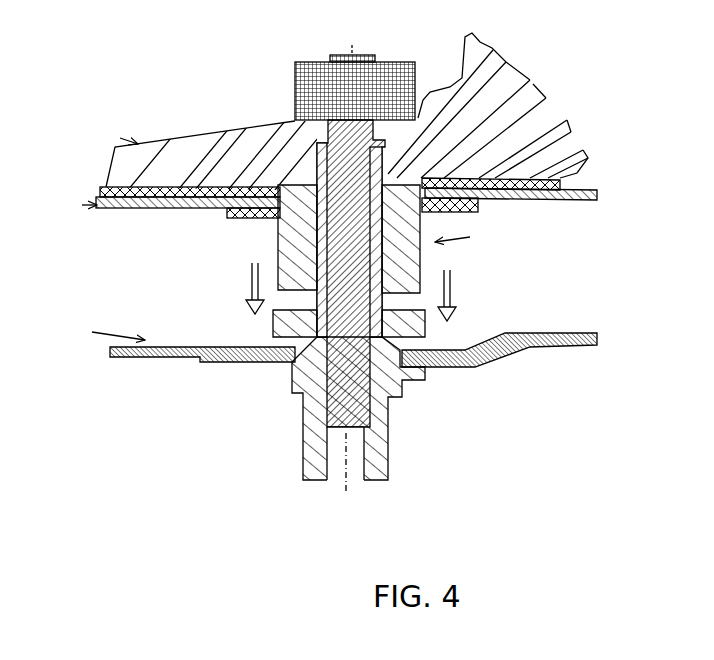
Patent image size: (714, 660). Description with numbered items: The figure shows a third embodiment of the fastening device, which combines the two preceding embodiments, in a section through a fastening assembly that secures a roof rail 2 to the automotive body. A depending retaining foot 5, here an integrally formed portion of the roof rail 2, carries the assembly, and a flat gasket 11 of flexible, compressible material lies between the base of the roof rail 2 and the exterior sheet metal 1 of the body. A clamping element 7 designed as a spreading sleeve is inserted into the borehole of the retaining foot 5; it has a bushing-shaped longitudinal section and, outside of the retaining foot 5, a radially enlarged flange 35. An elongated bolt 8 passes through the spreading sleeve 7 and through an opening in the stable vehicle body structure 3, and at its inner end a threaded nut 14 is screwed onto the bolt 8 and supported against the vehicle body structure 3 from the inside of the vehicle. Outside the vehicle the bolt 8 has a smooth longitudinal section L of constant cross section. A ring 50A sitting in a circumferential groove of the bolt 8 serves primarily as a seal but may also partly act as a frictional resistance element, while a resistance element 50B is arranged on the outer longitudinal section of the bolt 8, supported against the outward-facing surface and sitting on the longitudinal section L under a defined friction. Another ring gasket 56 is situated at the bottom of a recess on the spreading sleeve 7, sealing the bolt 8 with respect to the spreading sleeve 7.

The exterior sheet metal 1 is at (584, 192).
The roof rail 2 is at (520, 60).
The vehicle body structure 3 is at (498, 350).
The retaining foot 5 is at (297, 187).
The clamping element (spreading sleeve) 7 is at (423, 253).
The bolt 8 is at (385, 277).
The flat gasket 11 is at (145, 182).
The threaded nut 14 is at (385, 413).
The flange 35 is at (432, 328).
The ring 50A is at (415, 165).
The resistance element 50B is at (291, 91).
The ring gasket 56 is at (270, 368).
The longitudinal section L is at (335, 140).